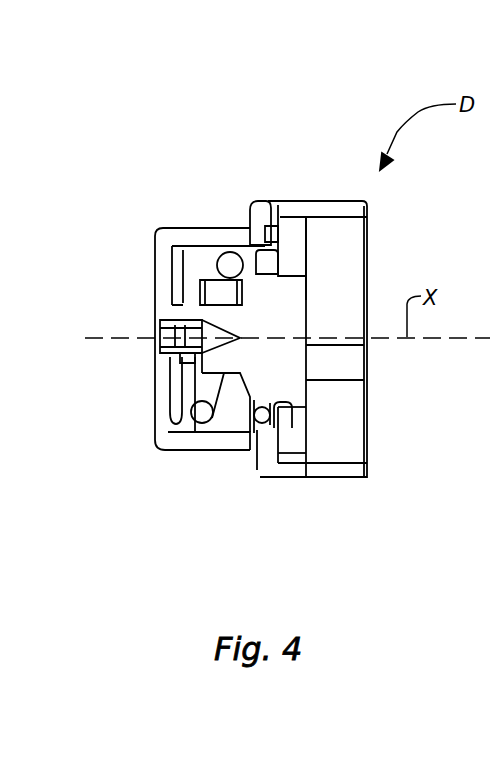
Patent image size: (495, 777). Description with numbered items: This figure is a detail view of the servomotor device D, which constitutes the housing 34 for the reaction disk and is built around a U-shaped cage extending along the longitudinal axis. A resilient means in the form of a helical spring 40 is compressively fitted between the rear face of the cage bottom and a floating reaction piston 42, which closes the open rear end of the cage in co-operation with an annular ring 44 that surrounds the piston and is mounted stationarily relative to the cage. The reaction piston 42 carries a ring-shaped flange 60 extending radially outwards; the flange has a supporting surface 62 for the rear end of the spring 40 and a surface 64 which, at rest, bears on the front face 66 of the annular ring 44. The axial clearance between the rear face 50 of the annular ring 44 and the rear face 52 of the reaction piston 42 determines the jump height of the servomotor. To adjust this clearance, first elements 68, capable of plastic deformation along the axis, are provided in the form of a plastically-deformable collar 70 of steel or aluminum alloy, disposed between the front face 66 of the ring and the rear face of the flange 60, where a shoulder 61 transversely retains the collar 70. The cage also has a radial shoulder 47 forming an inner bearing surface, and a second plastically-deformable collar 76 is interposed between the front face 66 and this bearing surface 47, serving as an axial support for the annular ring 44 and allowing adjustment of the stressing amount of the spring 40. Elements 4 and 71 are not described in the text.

The housing 4 is at (178, 433).
The housing 34 is at (355, 250).
The helical spring 40 is at (202, 432).
The reaction piston 42 is at (300, 380).
The annular ring 44 is at (302, 260).
The radial shoulder 47 is at (258, 242).
The rear face of the annular ring 50 is at (290, 422).
The rear face of the reaction piston 52 is at (300, 345).
The ring-shaped flange 60 is at (250, 443).
The shoulder 61 is at (292, 410).
The supporting surface 62 is at (238, 246).
The surface of the flange 64 is at (255, 272).
The front face of the annular ring 66 is at (283, 432).
The first elements 68 is at (285, 252).
The plastically-deformable collar 70 is at (280, 443).
The latch 71 is at (266, 205).
The plastically-deformable collar 76 is at (278, 440).